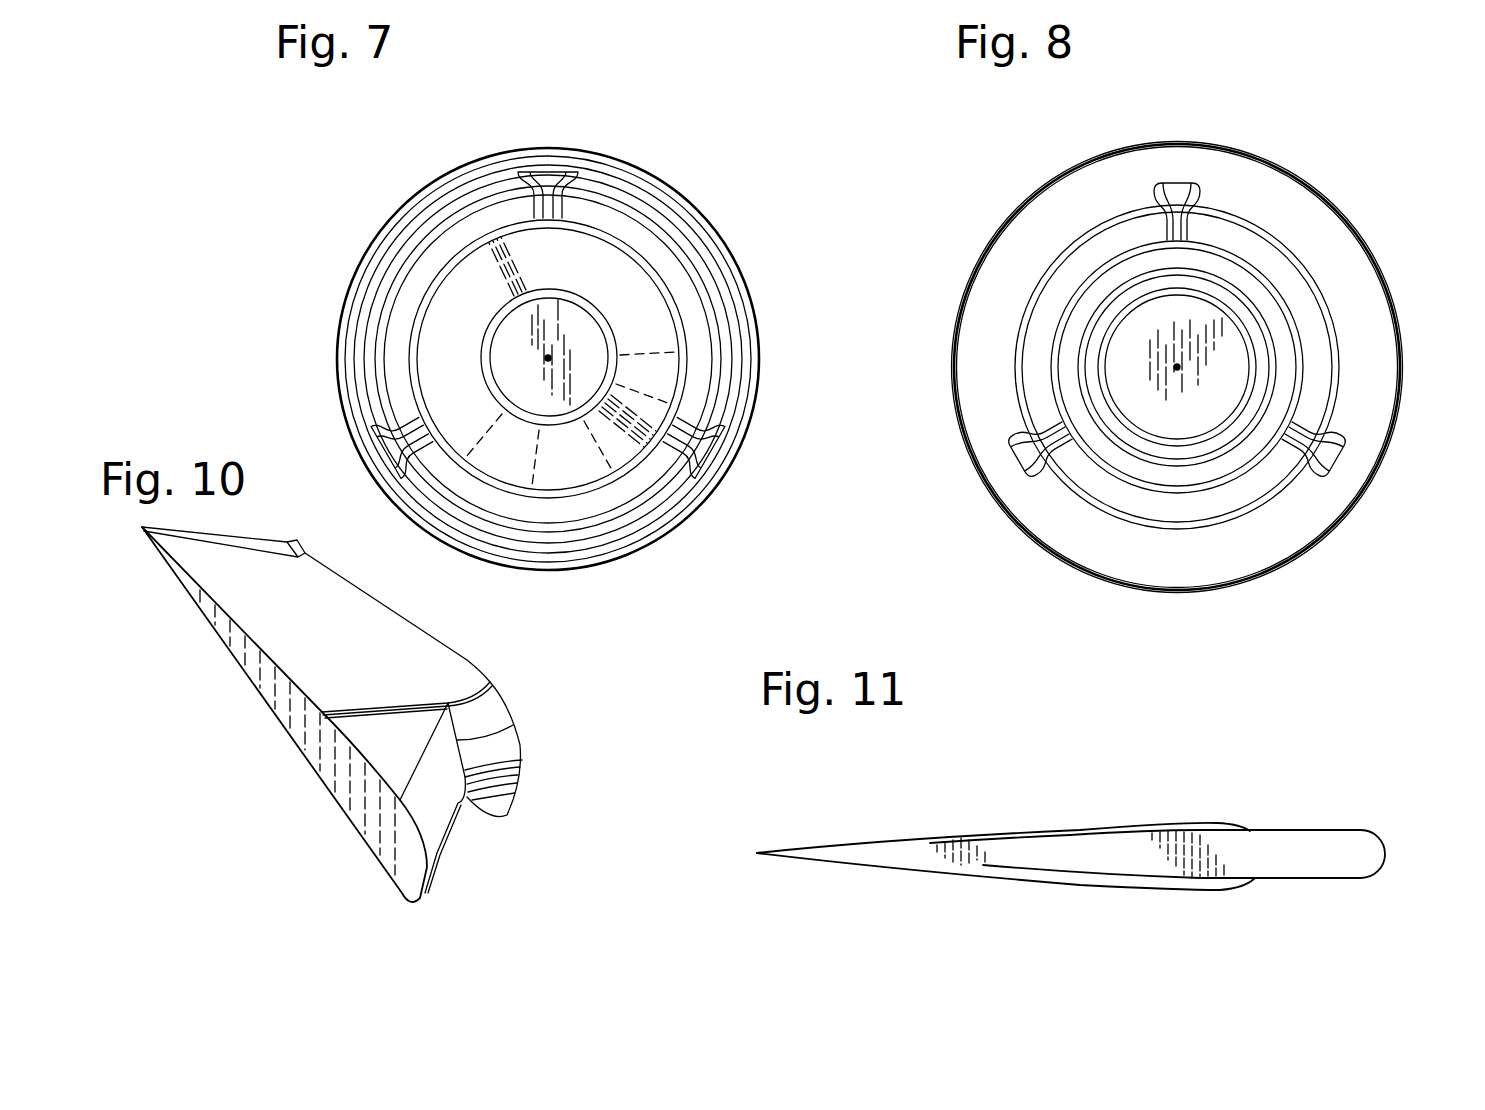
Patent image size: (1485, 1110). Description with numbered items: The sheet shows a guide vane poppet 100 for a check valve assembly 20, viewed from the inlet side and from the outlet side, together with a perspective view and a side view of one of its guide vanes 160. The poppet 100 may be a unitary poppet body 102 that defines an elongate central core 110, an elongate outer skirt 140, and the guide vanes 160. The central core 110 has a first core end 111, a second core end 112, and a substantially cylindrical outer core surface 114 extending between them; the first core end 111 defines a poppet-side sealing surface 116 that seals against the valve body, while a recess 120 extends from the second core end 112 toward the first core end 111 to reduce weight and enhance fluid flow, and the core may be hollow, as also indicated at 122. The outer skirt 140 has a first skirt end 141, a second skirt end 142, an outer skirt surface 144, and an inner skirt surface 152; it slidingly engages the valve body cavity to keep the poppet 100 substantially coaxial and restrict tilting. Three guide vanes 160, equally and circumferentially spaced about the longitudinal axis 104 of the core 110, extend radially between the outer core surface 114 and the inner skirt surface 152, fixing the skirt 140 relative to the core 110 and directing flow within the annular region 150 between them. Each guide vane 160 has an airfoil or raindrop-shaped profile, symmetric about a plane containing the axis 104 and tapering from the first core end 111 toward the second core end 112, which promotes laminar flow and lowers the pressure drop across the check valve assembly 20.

In FIG. 7, the check valve assembly 20 is at (544, 319).
In FIG. 8, the check valve assembly 20 is at (1216, 334).
In FIG. 10, the check valve assembly 20 is at (375, 697).
In FIG. 11, the check valve assembly 20 is at (1071, 800).
In FIG. 7, the guide vane poppet 100 is at (544, 328).
In FIG. 8, the guide vane poppet 100 is at (1216, 346).
In FIG. 10, the guide vane poppet 100 is at (359, 697).
In FIG. 11, the guide vane poppet 100 is at (1071, 820).
In FIG. 7, the unitary poppet body 102 is at (425, 292).
In FIG. 8, the unitary poppet body 102 is at (1058, 330).
In FIG. 7, the longitudinal axis 104 is at (546, 362).
In FIG. 8, the longitudinal axis 104 is at (1175, 364).
In FIG. 7, the elongate central core 110 is at (580, 505).
In FIG. 8, the elongate central core 110 is at (1267, 462).
In FIG. 7, the first core end 111 is at (585, 325).
In FIG. 8, the second core end 112 is at (1298, 355).
In FIG. 7, the outer core surface 114 is at (672, 290).
In FIG. 8, the outer core surface 114 is at (1185, 498).
In FIG. 7, the poppet-side sealing surface 116 is at (662, 330).
In FIG. 8, the recess 120 is at (1197, 410).
In FIG. 8, the slot 122 is at (1165, 430).
In FIG. 7, the elongate outer skirt 140 is at (541, 146).
In FIG. 8, the elongate outer skirt 140 is at (1202, 142).
In FIG. 7, the first skirt end 141 is at (420, 192).
In FIG. 8, the second skirt end 142 is at (1380, 265).
In FIG. 7, the outer skirt surface 144 is at (613, 152).
In FIG. 8, the outer skirt surface 144 is at (1335, 200).
In FIG. 7, the annular region 150 is at (396, 350).
In FIG. 8, the annular region 150 is at (1070, 283).
In FIG. 7, the inner skirt surface 152 is at (652, 219).
In FIG. 8, the inner skirt surface 152 is at (1350, 322).
In FIG. 10, the guide vane 160 is at (243, 534).
In FIG. 11, the guide vane 160 is at (955, 842).